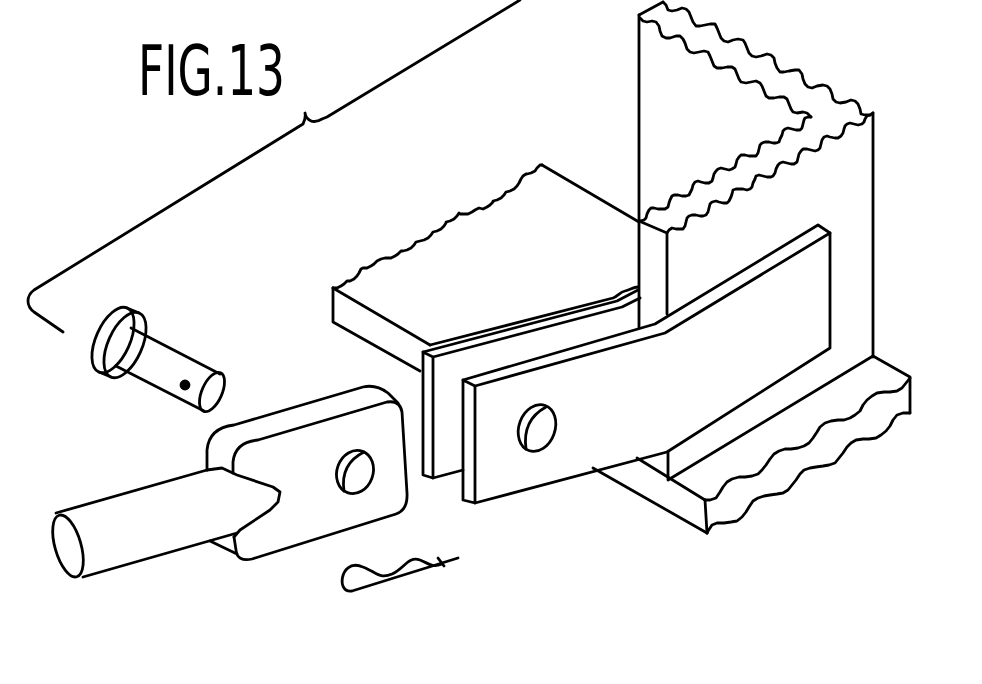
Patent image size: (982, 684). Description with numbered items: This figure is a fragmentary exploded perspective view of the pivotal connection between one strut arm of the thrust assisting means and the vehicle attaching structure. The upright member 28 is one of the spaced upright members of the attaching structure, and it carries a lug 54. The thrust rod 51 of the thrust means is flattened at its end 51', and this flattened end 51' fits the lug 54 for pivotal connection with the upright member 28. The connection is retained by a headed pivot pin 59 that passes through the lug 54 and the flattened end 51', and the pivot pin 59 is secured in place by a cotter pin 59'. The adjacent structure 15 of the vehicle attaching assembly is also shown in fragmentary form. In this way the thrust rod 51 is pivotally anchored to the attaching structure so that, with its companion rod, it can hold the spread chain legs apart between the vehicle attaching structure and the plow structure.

The mounting block 15 is at (436, 221).
The upright member 28 is at (680, 107).
The thrust rod 51 is at (142, 544).
The flattened end 51' is at (307, 448).
The lug 54 is at (436, 478).
The headed pivot pin 59 is at (161, 358).
The cotter pin 59' is at (422, 586).